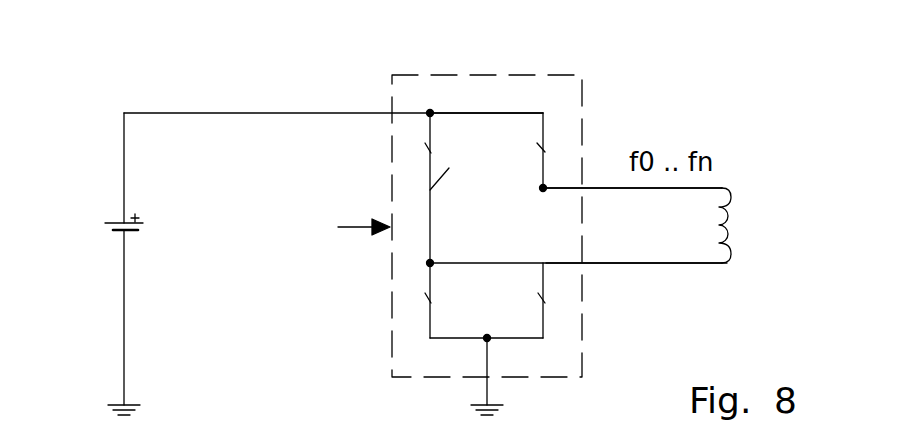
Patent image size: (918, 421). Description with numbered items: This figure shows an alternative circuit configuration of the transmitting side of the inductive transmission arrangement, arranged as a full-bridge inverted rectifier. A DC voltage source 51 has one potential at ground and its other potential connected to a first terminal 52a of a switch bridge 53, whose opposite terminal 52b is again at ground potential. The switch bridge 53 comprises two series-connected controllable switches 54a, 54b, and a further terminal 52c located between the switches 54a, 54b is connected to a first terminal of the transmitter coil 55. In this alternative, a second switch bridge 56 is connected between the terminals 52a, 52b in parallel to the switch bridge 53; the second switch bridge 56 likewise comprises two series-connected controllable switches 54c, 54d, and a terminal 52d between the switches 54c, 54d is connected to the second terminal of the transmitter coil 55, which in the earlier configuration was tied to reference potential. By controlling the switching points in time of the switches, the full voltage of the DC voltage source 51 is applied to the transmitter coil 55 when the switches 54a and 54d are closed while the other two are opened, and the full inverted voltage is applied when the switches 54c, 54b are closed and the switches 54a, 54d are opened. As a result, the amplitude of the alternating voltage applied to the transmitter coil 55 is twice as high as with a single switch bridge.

The voltage source 51 is at (113, 233).
The first terminal 52a is at (432, 110).
The opposite terminal 52b is at (490, 341).
The further terminal 52c is at (540, 190).
The terminal 52d is at (433, 266).
The switch bridge 53 is at (548, 230).
The controllable switch 54a is at (540, 152).
The controllable switch 54b is at (542, 303).
The controllable switch 54c is at (427, 149).
The controllable switch 54d is at (424, 305).
The transmitter coil 55 is at (736, 228).
The second switch bridge 56 is at (486, 225).